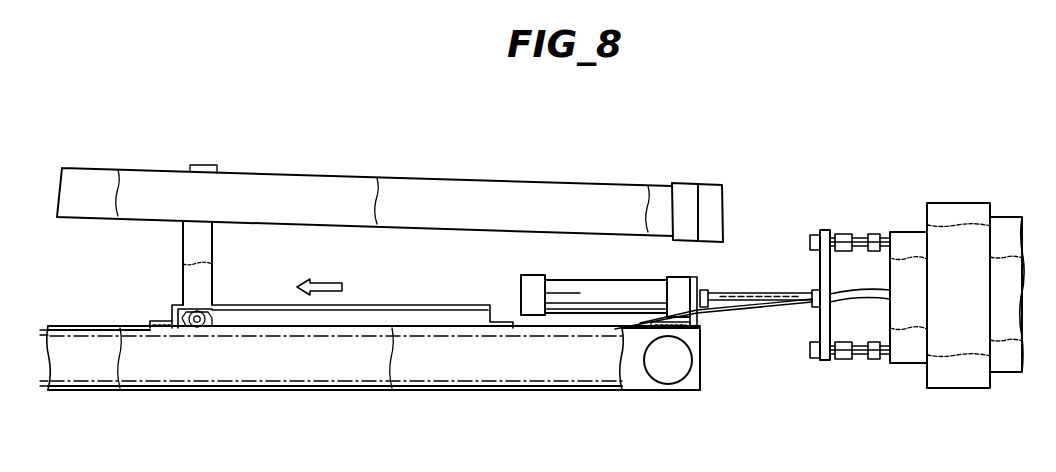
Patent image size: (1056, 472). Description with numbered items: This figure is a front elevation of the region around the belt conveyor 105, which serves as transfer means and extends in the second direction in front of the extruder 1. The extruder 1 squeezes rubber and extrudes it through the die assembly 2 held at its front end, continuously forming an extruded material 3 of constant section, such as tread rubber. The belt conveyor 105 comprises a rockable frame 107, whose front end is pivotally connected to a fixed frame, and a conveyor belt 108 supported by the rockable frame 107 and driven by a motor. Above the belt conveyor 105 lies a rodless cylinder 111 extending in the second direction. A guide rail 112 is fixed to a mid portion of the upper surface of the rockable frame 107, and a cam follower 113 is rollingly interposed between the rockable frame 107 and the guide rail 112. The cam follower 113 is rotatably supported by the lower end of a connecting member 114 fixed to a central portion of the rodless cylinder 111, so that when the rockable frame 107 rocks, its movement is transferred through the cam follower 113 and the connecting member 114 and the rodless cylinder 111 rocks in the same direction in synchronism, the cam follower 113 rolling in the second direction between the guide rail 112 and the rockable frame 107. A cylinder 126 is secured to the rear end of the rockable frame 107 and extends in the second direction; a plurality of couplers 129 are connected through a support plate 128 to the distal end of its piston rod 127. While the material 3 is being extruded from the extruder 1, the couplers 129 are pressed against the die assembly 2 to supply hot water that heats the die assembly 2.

The extruder 1 is at (955, 204).
The die assembly 2 is at (906, 362).
The extruded material 3 is at (742, 314).
The belt conveyor 105 is at (409, 398).
The rockable frame 107 is at (555, 390).
The conveyor belt 108 is at (232, 380).
The rodless cylinder 111 is at (436, 186).
The guide rail 112 is at (400, 304).
The cam follower 113 is at (213, 306).
The connecting member 114 is at (213, 240).
The cylinder 126 is at (602, 283).
The piston rod 127 is at (750, 292).
The support plate 128 is at (819, 323).
The couplers 129 is at (850, 235).